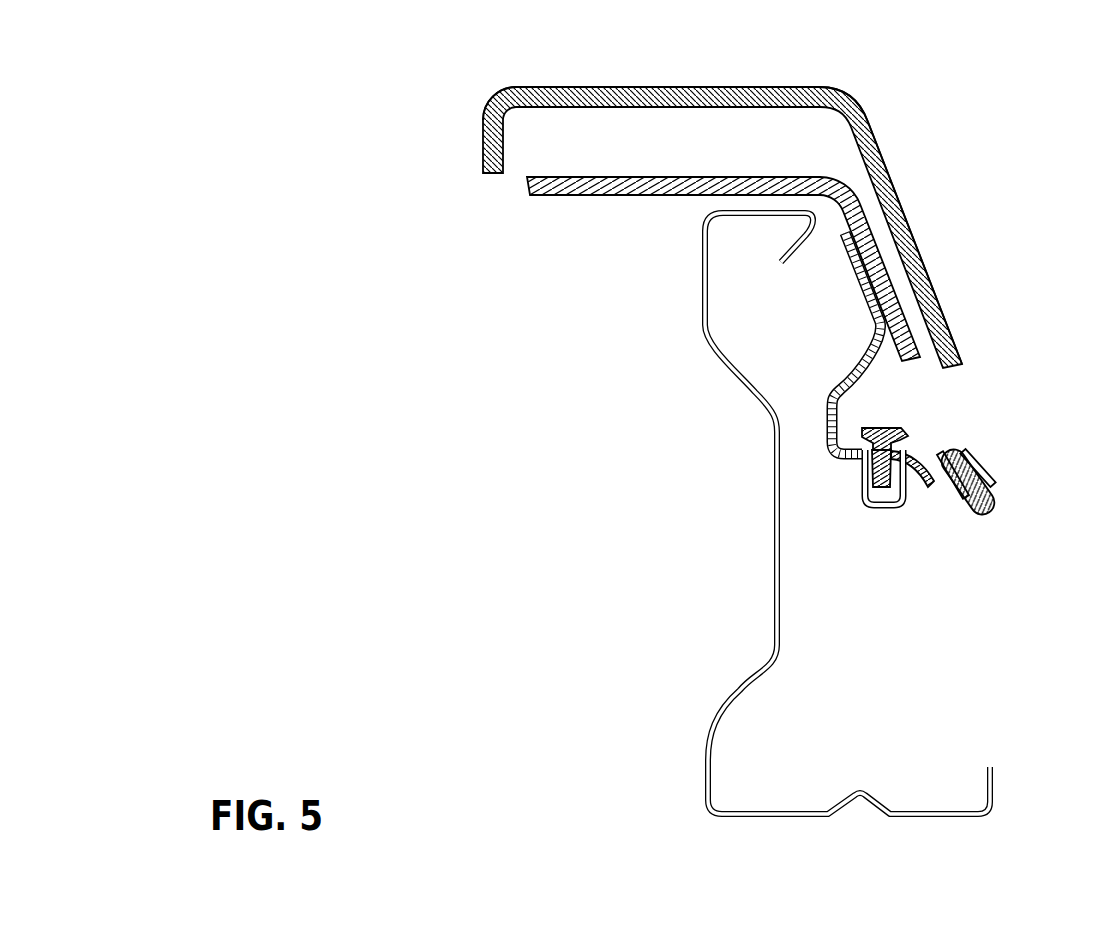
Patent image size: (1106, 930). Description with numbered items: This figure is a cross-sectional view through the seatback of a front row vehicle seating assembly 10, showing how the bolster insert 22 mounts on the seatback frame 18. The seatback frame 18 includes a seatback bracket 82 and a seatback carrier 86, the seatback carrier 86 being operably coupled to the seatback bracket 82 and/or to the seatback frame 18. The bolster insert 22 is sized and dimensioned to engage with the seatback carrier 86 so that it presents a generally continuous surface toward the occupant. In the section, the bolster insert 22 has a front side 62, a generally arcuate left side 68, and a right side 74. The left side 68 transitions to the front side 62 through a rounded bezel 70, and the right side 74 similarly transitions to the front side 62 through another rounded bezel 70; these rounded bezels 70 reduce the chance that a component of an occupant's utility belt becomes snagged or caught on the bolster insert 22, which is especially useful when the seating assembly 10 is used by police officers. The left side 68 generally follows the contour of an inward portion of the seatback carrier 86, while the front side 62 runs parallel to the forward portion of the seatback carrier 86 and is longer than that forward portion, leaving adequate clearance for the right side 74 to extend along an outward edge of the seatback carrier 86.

The vehicle seating assembly 10 is at (1022, 258).
The seatback frame 18 is at (704, 752).
The bolster insert 22 is at (773, 82).
The front side 62 is at (676, 86).
The left side 68 is at (920, 258).
The rounded bezel 70 is at (498, 92).
The right side 74 is at (483, 156).
The seatback bracket 82 is at (862, 381).
The seatback carrier 86 is at (612, 197).